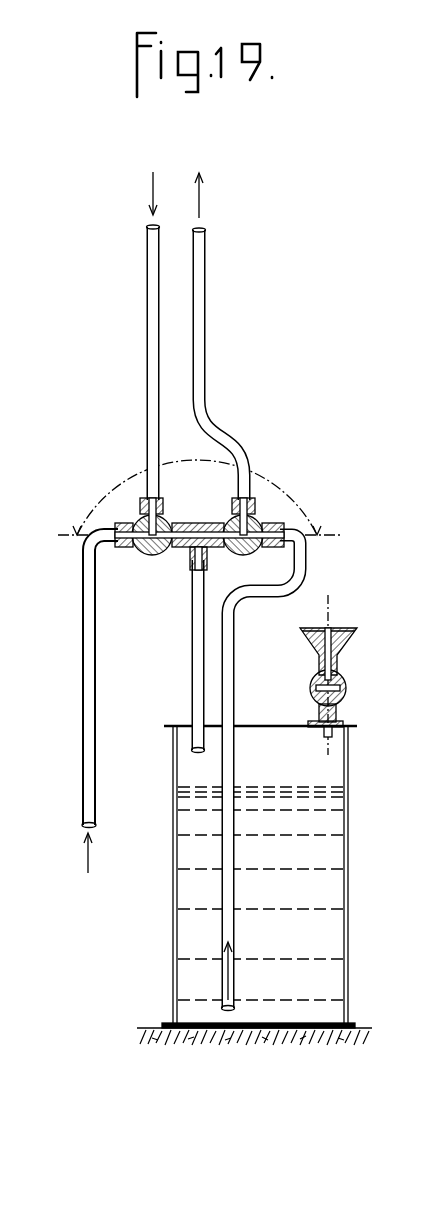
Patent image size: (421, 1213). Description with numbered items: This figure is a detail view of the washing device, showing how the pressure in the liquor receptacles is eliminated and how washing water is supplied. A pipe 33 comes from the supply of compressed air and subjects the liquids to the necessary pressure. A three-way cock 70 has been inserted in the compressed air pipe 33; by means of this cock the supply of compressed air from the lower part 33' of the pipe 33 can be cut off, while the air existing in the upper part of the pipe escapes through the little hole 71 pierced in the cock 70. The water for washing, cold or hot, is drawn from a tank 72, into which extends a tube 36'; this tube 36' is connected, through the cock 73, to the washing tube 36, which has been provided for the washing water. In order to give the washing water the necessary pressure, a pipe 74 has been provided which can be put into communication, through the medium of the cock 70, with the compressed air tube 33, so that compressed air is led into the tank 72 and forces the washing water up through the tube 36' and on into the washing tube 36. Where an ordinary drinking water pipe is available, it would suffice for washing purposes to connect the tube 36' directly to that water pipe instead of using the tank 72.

The compressed air pipe 33 is at (127, 362).
The washing tube 36 is at (219, 364).
The lower part of the pipe 33 33' is at (77, 681).
The tube 36' is at (261, 773).
The three-way cock 70 is at (148, 556).
The little hole 71 is at (158, 522).
The tank 72 is at (185, 827).
The cock 73 is at (238, 560).
The pipe 74 is at (196, 648).